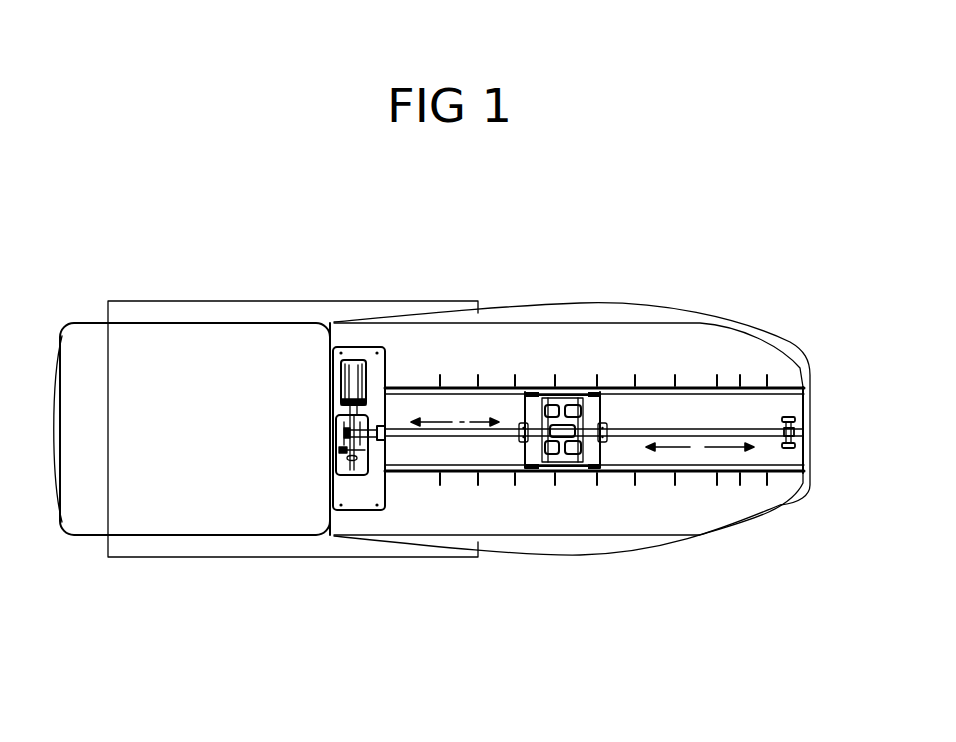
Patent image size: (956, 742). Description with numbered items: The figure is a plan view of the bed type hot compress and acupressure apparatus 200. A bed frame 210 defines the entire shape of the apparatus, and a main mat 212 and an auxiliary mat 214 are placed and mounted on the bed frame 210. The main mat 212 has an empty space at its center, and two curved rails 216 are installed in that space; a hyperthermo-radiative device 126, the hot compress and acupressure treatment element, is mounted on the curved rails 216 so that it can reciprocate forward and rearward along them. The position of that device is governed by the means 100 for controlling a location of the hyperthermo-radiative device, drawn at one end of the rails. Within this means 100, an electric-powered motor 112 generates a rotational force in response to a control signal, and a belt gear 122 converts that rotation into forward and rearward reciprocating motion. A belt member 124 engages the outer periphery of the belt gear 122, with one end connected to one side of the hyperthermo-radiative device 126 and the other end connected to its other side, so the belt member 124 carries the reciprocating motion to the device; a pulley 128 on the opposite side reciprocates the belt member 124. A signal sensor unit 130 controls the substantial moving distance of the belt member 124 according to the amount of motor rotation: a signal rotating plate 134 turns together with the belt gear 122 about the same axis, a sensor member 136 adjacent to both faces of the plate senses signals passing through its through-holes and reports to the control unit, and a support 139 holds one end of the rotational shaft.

The means for controlling a location of the hyperthermo-radiative device 100 is at (377, 368).
The electric-powered motor 112 is at (351, 345).
The belt gear 122 is at (372, 412).
The belt member 124 is at (480, 432).
The hyperthermo-radiative device 126 is at (578, 393).
The pulley 128 is at (797, 445).
The signal sensor unit 130 is at (330, 469).
The signal rotating plate 134 is at (367, 475).
The sensor member 136 is at (347, 475).
The support 139 is at (352, 475).
The bed type hot compress and acupressure apparatus 200 is at (294, 268).
The bed frame 210 is at (229, 313).
The main mat 212 is at (690, 345).
The auxiliary mat 214 is at (168, 345).
The curved rails 216 is at (762, 388).